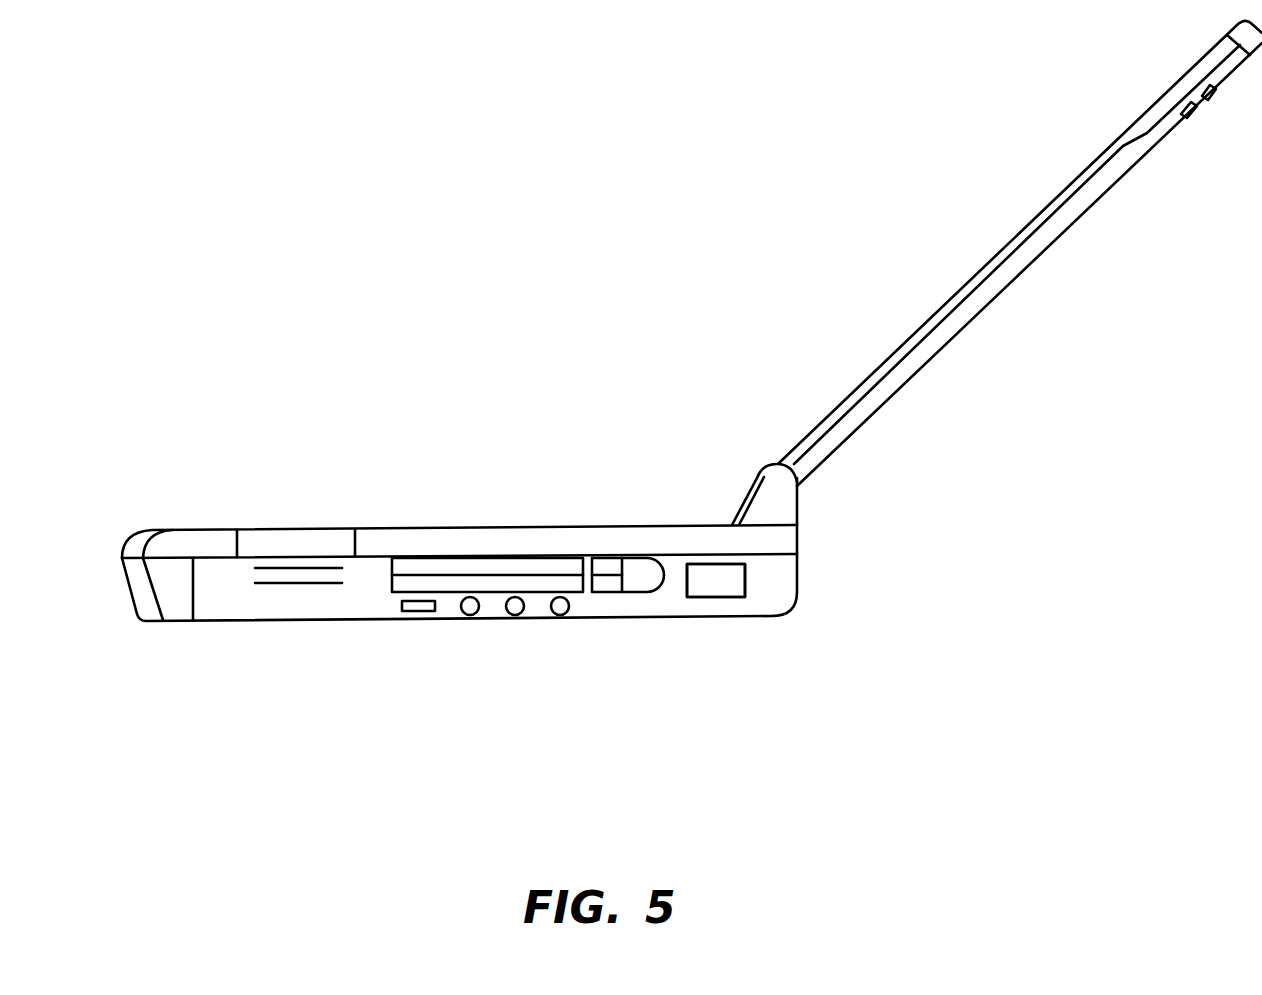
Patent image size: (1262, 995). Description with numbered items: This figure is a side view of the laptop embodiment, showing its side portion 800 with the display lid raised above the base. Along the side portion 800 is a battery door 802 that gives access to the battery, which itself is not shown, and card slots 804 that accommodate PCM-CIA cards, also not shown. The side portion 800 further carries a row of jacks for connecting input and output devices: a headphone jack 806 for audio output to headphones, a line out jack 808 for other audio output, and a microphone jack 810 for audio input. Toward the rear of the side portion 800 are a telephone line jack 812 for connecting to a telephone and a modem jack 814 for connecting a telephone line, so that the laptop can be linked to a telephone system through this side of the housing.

The side portion 800 is at (636, 345).
The battery door 802 is at (287, 600).
The card slots 804 is at (482, 567).
The headphone jack 806 is at (470, 617).
The line out jack 808 is at (517, 617).
The microphone jack 810 is at (563, 617).
The telephone line jack 812 is at (717, 585).
The modem jack 814 is at (717, 585).